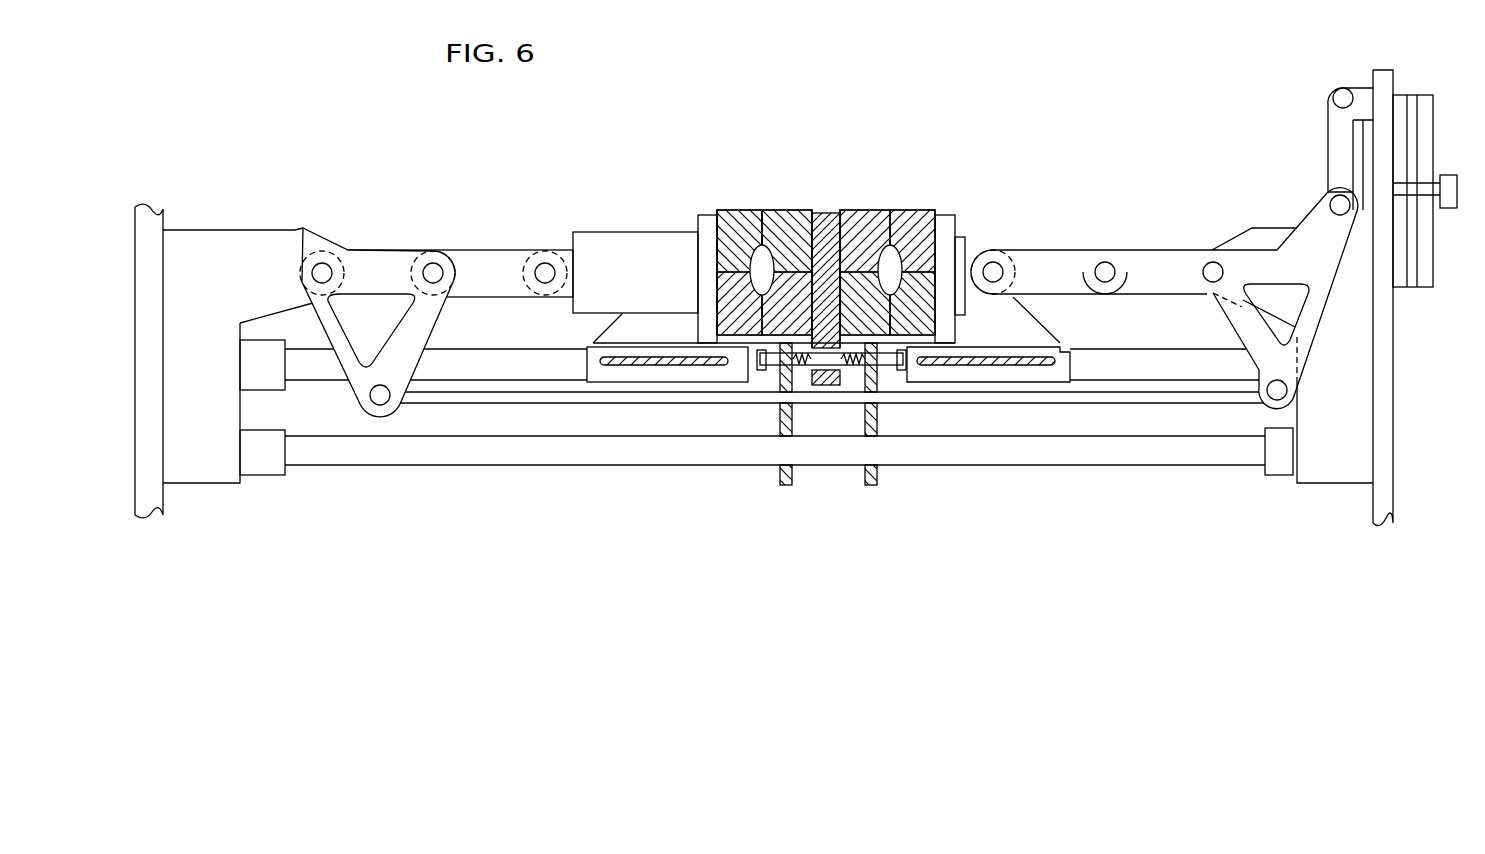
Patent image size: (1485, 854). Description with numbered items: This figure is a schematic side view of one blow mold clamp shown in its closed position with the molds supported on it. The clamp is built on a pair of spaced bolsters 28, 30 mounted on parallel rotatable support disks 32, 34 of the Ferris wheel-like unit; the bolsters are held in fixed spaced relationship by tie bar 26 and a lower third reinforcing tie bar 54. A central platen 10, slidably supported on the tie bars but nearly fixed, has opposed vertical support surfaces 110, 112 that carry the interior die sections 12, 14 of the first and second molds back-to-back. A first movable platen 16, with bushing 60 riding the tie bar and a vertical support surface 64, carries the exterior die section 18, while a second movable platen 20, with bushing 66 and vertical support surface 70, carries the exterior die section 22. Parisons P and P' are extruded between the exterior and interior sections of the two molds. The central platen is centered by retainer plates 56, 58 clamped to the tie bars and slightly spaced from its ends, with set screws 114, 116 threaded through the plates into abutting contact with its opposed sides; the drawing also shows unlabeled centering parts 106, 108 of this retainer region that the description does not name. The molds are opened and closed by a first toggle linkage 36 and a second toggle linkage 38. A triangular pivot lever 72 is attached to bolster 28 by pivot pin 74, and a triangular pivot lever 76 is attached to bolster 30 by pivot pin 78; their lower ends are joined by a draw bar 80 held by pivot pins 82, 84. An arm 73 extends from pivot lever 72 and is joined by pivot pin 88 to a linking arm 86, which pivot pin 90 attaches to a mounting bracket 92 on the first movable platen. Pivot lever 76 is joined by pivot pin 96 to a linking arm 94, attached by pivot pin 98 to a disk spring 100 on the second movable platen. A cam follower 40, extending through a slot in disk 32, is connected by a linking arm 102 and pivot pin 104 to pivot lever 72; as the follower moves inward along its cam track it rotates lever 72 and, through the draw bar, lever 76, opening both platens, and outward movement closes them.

The central platen 10 is at (837, 213).
The interior die section 12 is at (888, 213).
The interior die section 14 is at (792, 227).
The first movable platen 16 is at (960, 212).
The exterior die section 18 is at (932, 213).
The second movable platen 20 is at (702, 215).
The exterior die section 22 is at (745, 213).
The tie bar 26 is at (1170, 353).
The bolster 28 is at (1237, 238).
The bolster 30 is at (245, 235).
The support disk 32 is at (1388, 325).
The support disk 34 is at (165, 222).
The first toggle linkage 36 is at (1137, 233).
The second toggle linkage 38 is at (452, 243).
The cam follower 40 is at (1448, 177).
The tie bar 54 is at (1022, 457).
The retainer plate 56 is at (878, 478).
The retainer plate 58 is at (780, 483).
The bushing 60 is at (1072, 350).
The vertical support surface 64 is at (958, 237).
The bushing 66 is at (587, 352).
The vertical support surface 70 is at (720, 215).
The first pivot lever 72 is at (1298, 242).
The pivot arm 73 is at (1157, 255).
The pivot pin 74 is at (1207, 283).
The pivot lever 76 is at (368, 250).
The pivot pin 78 is at (320, 262).
The draw bar 80 is at (1138, 398).
The pivot pin 82 is at (1273, 397).
The pivot pin 84 is at (381, 398).
The linking arm 86 is at (1062, 260).
The pivot pin 88 is at (1105, 270).
The pivot pin 90 is at (995, 270).
The mounting bracket 92 is at (978, 250).
The linking arm 94 is at (493, 260).
The pivot pin 96 is at (432, 267).
The pivot pin 98 is at (543, 263).
The disk spring 100 is at (607, 240).
The linking arm 102 is at (1335, 128).
The pivot pin 104 is at (1340, 90).
The spring 106 is at (852, 372).
The shaft 108 is at (800, 372).
The vertical support surface 110 is at (848, 213).
The vertical support surface 112 is at (813, 213).
The set screw 114 is at (897, 368).
The set screw 116 is at (757, 368).
The parison P is at (769, 226).
The parison P' is at (884, 226).